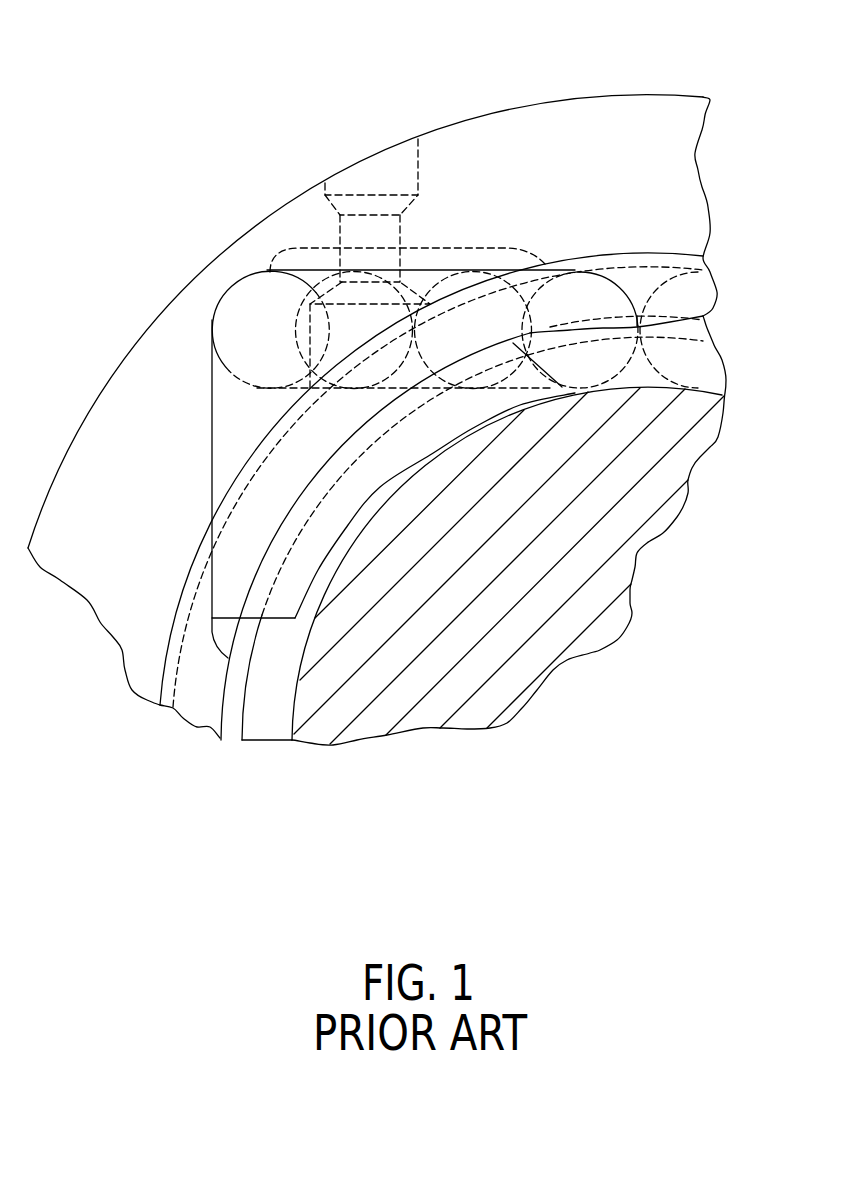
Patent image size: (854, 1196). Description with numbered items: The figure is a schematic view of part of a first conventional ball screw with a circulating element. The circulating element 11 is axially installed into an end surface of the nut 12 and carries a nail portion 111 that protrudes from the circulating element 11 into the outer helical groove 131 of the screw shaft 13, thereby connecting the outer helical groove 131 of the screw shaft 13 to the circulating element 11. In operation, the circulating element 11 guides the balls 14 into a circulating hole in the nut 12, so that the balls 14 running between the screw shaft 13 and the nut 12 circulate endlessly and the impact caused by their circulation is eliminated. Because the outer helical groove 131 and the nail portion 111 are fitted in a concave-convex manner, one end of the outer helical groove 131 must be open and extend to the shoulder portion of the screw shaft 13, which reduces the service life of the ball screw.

The circulating element 11 is at (223, 405).
The nail portion 111 is at (527, 390).
The nut 12 is at (653, 130).
The screw shaft 13 is at (520, 635).
The outer helical groove 131 is at (273, 720).
The balls 14 is at (693, 297).